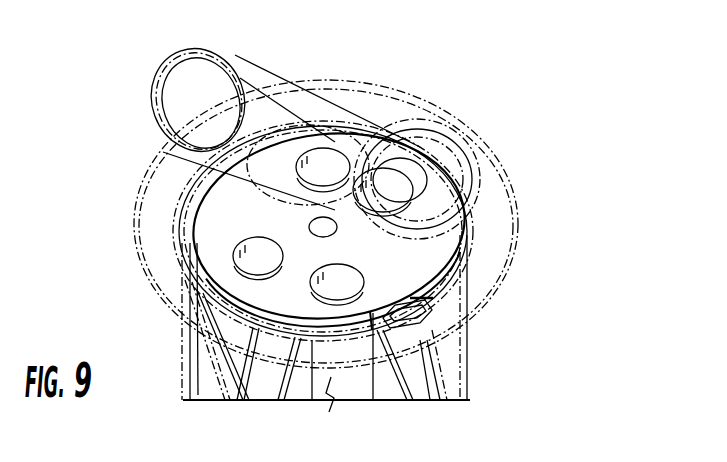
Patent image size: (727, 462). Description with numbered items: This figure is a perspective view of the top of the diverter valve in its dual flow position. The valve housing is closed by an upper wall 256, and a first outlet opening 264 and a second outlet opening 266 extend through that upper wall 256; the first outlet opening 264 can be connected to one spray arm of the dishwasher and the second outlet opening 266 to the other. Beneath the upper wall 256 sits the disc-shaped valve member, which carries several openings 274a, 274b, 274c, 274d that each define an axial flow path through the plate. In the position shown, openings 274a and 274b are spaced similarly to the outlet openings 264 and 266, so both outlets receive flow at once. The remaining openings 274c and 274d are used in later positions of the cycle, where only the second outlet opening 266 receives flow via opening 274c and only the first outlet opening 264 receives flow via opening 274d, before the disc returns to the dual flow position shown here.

The upper wall 256 is at (347, 87).
The first outlet opening 264 is at (437, 123).
The second outlet opening 266 is at (245, 68).
The opening 274a is at (405, 212).
The opening 274b is at (300, 176).
The opening 274c is at (362, 286).
The opening 274d is at (233, 263).